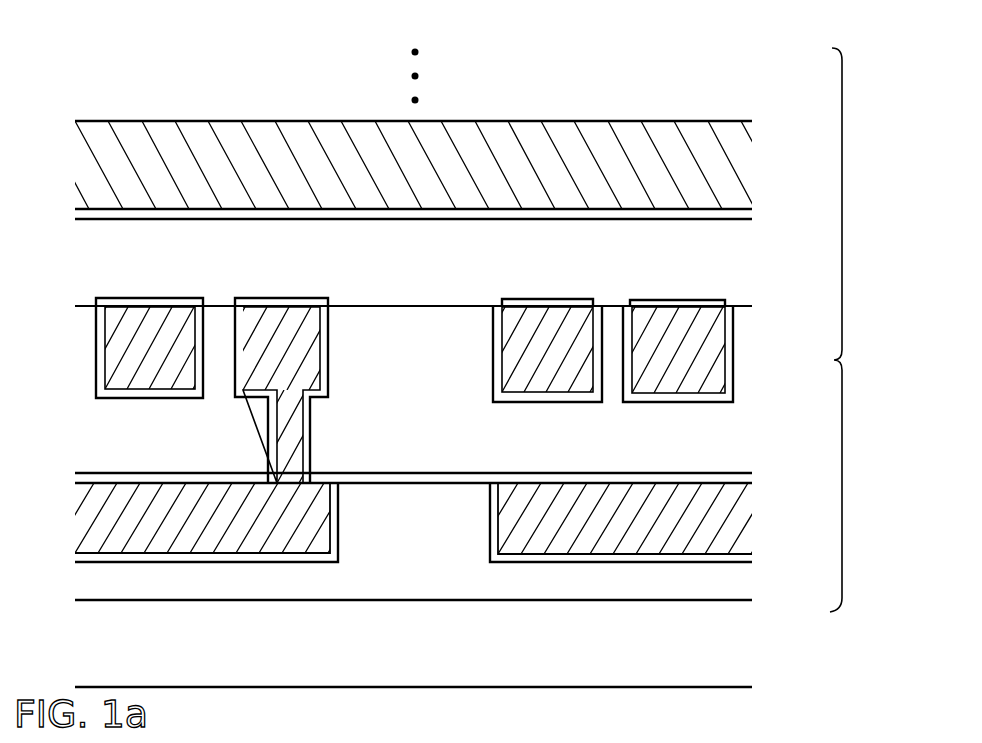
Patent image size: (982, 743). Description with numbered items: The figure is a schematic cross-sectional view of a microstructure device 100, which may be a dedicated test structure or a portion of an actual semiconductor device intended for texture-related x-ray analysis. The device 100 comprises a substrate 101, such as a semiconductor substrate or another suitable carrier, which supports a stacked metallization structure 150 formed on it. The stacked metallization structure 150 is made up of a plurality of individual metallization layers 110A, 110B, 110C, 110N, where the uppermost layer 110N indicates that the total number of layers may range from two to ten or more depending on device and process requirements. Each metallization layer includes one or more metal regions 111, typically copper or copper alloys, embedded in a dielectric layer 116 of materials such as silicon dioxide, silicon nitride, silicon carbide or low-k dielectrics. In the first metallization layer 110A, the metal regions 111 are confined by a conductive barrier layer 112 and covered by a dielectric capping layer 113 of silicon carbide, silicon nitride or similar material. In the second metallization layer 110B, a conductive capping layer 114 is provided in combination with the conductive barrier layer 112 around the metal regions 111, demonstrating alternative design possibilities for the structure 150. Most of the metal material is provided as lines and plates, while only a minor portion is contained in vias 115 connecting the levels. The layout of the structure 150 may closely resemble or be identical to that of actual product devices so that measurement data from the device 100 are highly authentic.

The microstructure device 100 is at (118, 66).
The metallization layer 110N is at (600, 64).
The metallization layer 110C is at (762, 170).
The second metallization layer 110B is at (761, 437).
The first metallization layer 110A is at (761, 597).
The stacked metallization structure 150 is at (859, 330).
The substrate 101 is at (718, 643).
The metal regions 111 is at (222, 528).
The conductive barrier layer 112 is at (331, 392).
The dielectric capping layer 113 is at (752, 481).
The conductive capping layer 114 is at (260, 298).
The via 115 is at (311, 438).
The dielectric layer 116 is at (459, 268).